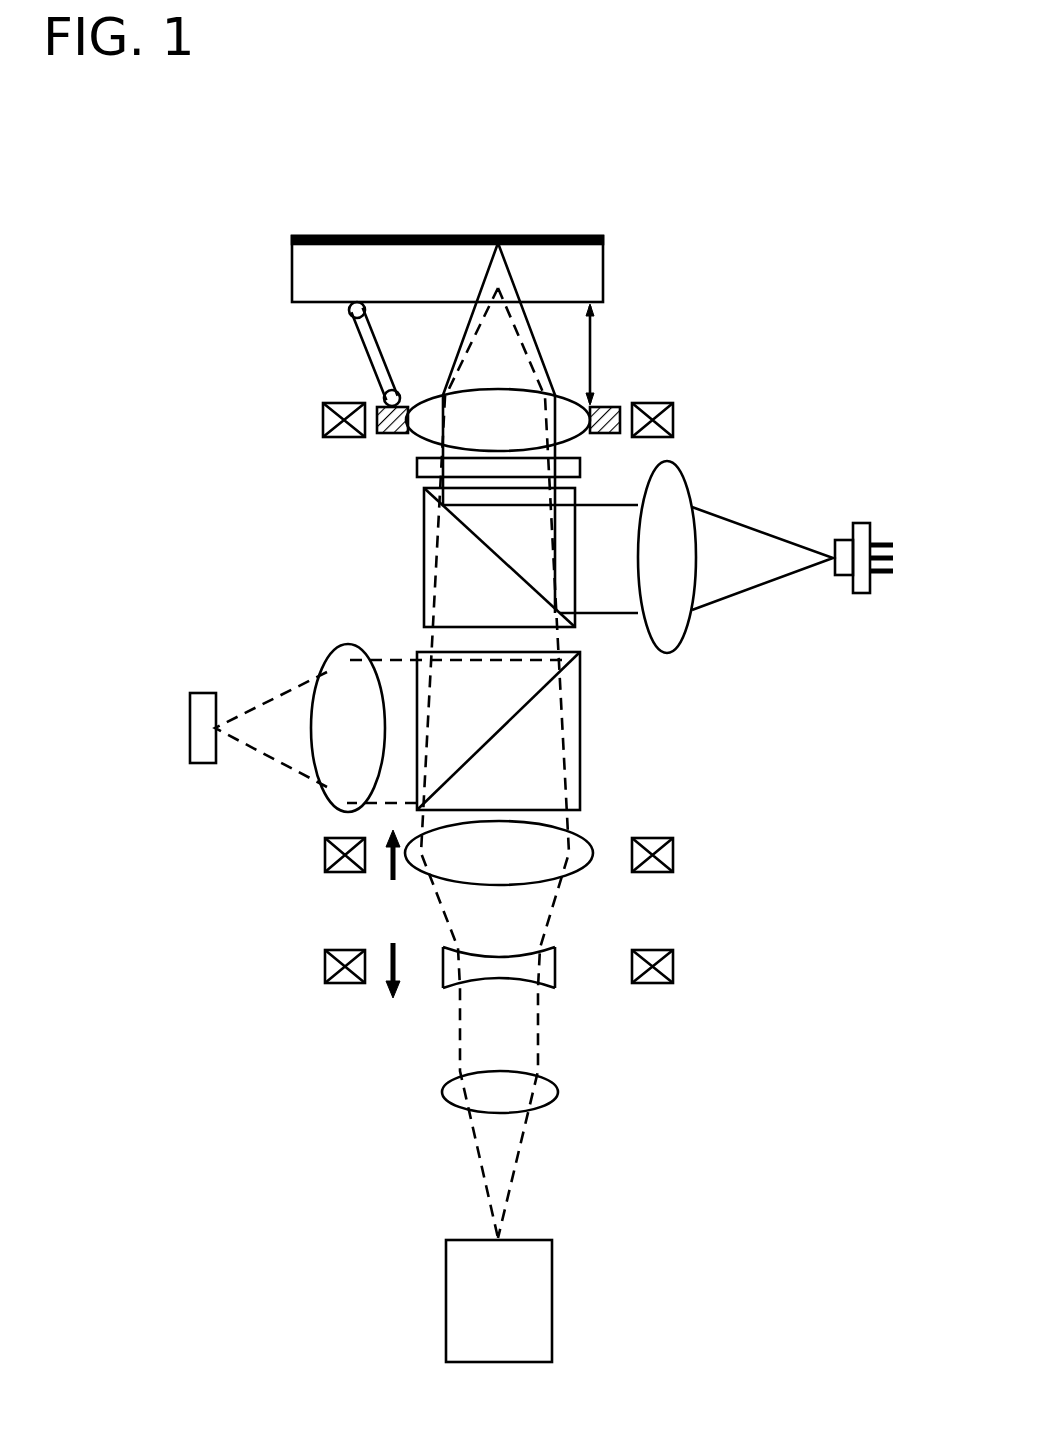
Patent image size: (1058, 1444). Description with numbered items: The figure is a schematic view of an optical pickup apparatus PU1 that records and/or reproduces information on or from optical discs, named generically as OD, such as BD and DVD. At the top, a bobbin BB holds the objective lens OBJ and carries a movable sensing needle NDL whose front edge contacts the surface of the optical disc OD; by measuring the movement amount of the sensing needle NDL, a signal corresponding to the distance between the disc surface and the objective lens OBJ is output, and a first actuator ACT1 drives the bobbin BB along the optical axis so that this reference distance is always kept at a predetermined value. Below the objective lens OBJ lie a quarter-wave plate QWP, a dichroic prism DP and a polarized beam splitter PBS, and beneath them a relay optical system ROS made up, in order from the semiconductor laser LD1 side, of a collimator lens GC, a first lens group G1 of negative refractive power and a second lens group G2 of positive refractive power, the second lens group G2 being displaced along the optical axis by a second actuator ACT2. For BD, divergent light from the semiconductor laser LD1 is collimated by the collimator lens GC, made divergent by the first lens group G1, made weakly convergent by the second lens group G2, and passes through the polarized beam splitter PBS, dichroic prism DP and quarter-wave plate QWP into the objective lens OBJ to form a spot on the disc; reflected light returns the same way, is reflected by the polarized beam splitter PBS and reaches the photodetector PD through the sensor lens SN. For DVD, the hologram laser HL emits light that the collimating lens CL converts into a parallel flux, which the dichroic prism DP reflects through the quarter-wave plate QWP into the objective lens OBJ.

The optical pickup apparatus PU1 is at (190, 223).
The optical disc OD is at (630, 203).
The sensing needle NDL is at (358, 337).
The objective lens OBJ is at (405, 437).
The bobbin BB is at (608, 407).
The first actuator ACT1 is at (323, 420).
The quarter-wave plate QWP is at (417, 466).
The dichroic prism DP is at (424, 563).
The collimating lens CL is at (683, 630).
The hologram laser HL is at (862, 523).
The polarized beam splitter PBS is at (580, 710).
The sensor lens SN is at (327, 663).
The photodetector PD is at (202, 693).
The second lens group G2 is at (587, 865).
The second actuator ACT2 is at (673, 863).
The first lens group G1 is at (555, 975).
The relay optical system ROS is at (282, 830).
The collimator lens GC is at (558, 1092).
The semiconductor laser LD1 is at (552, 1290).